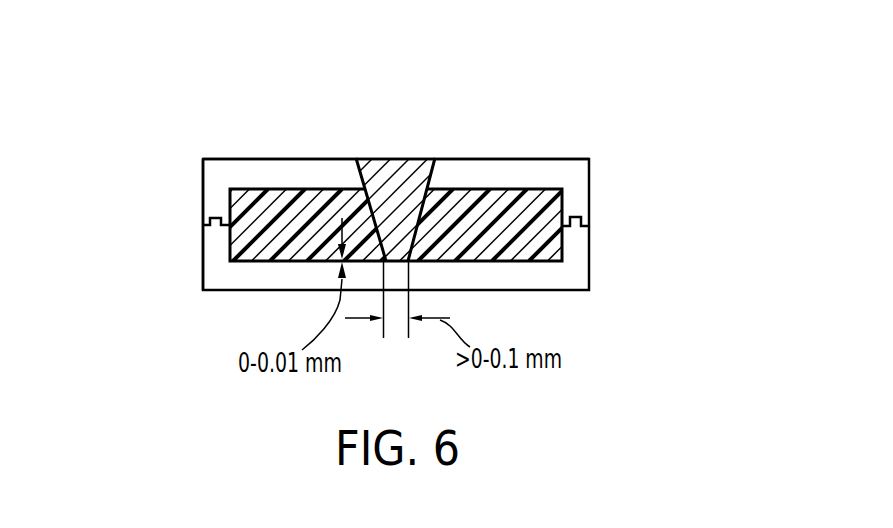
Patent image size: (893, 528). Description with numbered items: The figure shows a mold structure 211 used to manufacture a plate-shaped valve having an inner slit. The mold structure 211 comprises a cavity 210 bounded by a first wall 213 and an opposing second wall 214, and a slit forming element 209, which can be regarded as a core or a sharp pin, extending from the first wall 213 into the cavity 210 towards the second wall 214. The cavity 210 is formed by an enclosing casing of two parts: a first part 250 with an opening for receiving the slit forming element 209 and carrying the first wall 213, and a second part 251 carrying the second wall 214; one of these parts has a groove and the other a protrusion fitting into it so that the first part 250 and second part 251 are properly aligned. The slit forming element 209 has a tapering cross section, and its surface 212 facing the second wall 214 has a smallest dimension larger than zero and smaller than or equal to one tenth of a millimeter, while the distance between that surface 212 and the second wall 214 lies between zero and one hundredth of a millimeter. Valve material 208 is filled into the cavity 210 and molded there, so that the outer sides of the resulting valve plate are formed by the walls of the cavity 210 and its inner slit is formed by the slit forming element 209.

The mold structure 211 is at (163, 146).
The first part 250 is at (329, 159).
The second part 251 is at (202, 272).
The valve material 208 is at (568, 200).
The slit forming element 209 is at (430, 173).
The cavity 210 is at (218, 248).
The surface 212 is at (397, 288).
The first wall 213 is at (290, 210).
The second wall 214 is at (264, 232).